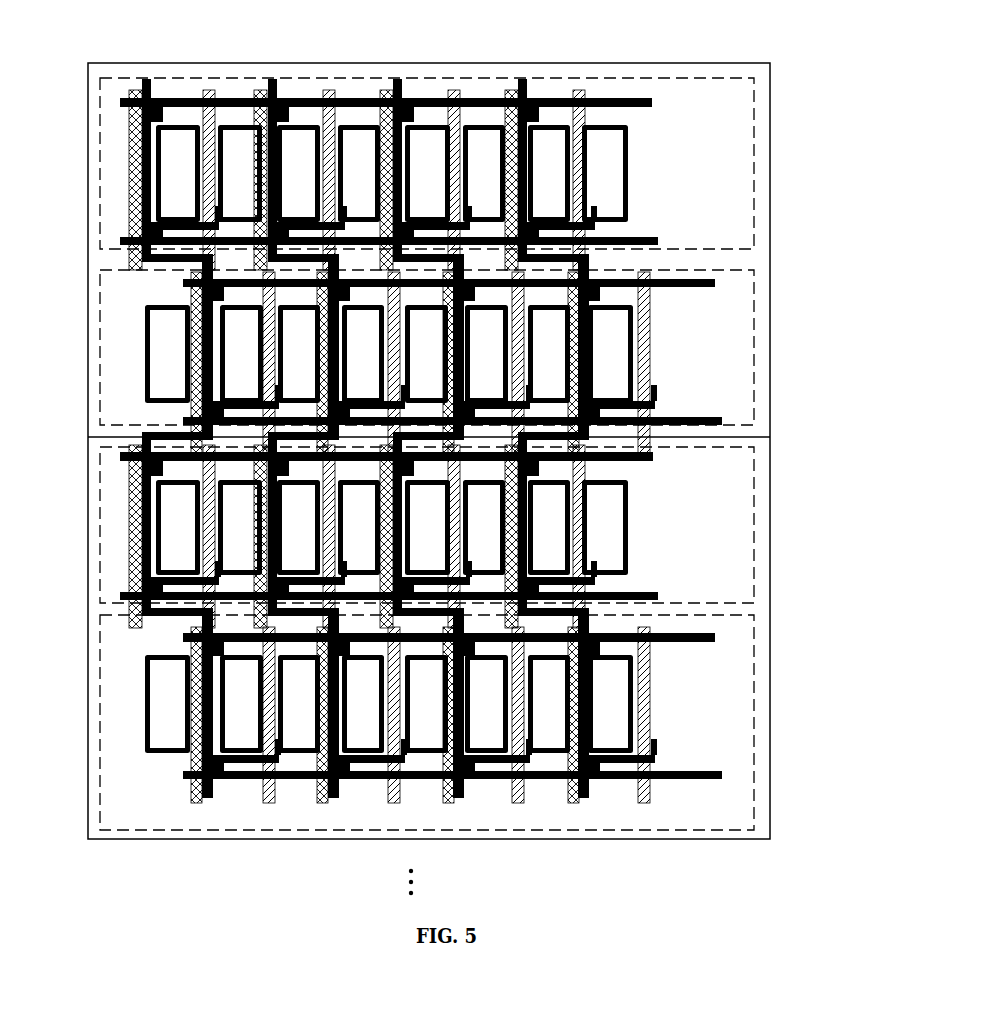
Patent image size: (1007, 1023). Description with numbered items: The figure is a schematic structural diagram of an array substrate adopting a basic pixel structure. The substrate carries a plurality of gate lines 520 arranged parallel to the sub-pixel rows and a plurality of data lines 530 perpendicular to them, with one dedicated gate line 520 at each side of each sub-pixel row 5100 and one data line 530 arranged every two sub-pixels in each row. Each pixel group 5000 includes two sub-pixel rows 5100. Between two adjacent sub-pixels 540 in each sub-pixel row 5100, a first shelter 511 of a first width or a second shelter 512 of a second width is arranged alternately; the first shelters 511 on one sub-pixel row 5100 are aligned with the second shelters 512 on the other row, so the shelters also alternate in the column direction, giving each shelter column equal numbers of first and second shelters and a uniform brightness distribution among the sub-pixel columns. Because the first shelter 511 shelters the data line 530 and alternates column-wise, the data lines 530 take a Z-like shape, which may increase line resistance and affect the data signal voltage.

The first shelter 511 is at (130, 90).
The second shelter 512 is at (208, 90).
The gate line 520 is at (648, 97).
The data line 530 is at (142, 175).
The sub-pixel 540 is at (155, 325).
The pixel group 5000 is at (765, 105).
The sub-pixel row 5100 is at (747, 143).